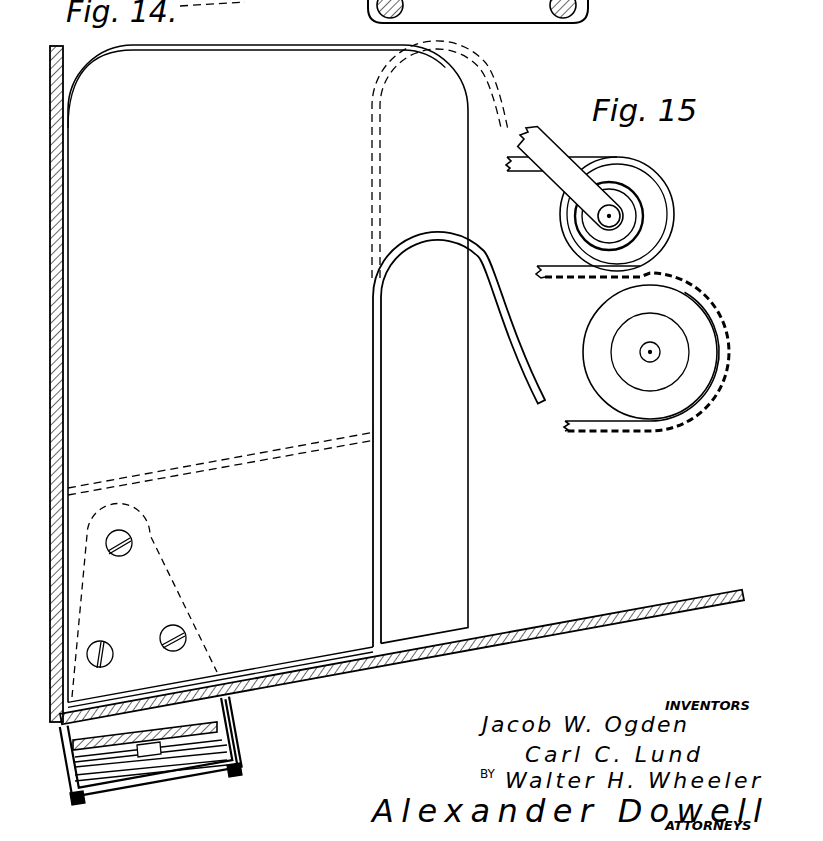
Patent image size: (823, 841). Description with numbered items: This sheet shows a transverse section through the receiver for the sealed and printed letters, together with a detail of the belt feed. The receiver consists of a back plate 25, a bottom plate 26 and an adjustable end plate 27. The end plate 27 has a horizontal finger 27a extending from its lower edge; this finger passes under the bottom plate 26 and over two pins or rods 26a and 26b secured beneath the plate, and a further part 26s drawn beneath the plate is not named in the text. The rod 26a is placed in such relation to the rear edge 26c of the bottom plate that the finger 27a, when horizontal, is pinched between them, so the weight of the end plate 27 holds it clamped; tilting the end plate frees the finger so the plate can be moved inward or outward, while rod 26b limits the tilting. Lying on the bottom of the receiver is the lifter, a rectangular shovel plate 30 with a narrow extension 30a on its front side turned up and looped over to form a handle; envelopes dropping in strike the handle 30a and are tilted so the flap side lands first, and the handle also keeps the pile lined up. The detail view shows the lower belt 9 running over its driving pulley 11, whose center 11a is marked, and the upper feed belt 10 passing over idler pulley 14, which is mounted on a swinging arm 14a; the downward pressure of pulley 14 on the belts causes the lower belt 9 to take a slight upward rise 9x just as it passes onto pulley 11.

In FIG. 15, the lower belt 9 is at (700, 294).
In FIG. 15, the rise in the belt 9x is at (655, 272).
In FIG. 15, the upper feed belt 10 is at (634, 168).
In FIG. 15, the pulley 11 is at (668, 407).
In FIG. 15, the roller axle 11a is at (650, 360).
In FIG. 15, the idler pulley 14 is at (637, 200).
In FIG. 15, the swinging arm 14a is at (553, 186).
In FIG. 14, the back plate 25 is at (52, 180).
In FIG. 14, the bottom plate 26 is at (533, 632).
In FIG. 14, the rod 26a is at (540, 10).
In FIG. 14, the rod 26b is at (380, 12).
In FIG. 14, the rear edge of plate 26 26c is at (451, 6).
In FIG. 14, the base plate slide bar 26s is at (233, 726).
In FIG. 14, the end plate 27 is at (445, 98).
In FIG. 14, the horizontal finger 27a is at (62, 760).
In FIG. 14, the shovel plate 30 is at (298, 665).
In FIG. 14, the handle 30a is at (538, 386).